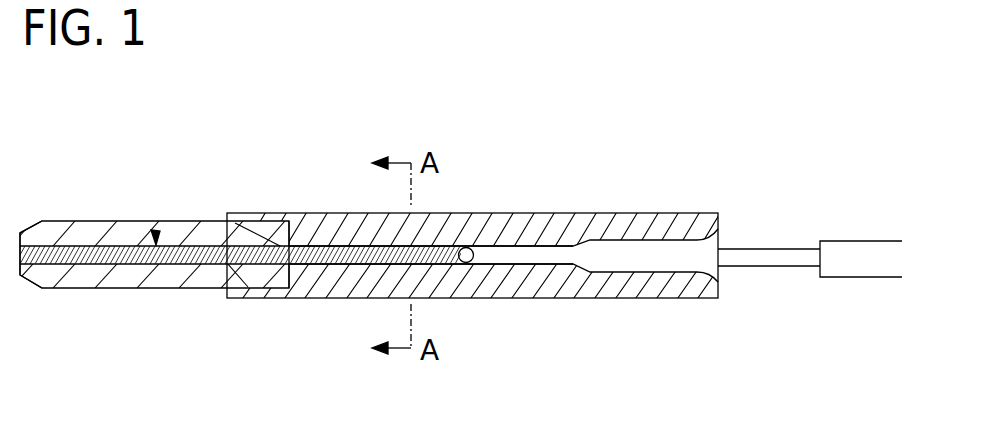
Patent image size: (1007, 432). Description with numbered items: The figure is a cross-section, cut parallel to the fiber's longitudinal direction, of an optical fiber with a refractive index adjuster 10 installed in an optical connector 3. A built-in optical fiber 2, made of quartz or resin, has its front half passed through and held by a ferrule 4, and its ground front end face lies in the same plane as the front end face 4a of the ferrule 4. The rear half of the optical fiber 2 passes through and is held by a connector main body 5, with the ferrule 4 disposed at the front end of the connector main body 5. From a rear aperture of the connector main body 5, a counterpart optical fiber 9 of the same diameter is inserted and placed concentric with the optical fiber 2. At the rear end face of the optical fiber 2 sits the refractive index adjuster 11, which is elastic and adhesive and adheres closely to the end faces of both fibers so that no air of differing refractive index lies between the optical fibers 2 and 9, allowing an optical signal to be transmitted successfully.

The optical fiber 2 is at (196, 245).
The optical connector 3 is at (309, 201).
The ferrule 4 is at (118, 221).
The front end face 4a is at (19, 237).
The connector main body 5 is at (350, 236).
The optical fiber 9 is at (797, 249).
The optical fiber with a refractive index adjuster 10 is at (154, 232).
The refractive index adjuster 11 is at (468, 249).